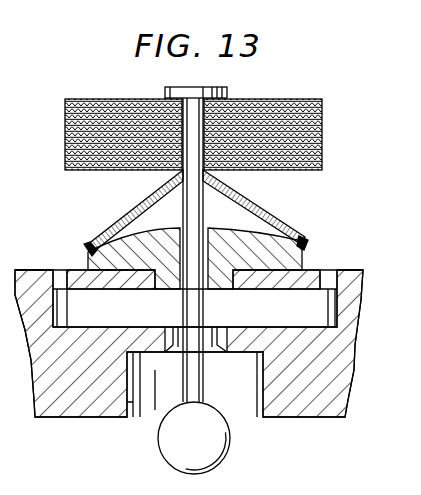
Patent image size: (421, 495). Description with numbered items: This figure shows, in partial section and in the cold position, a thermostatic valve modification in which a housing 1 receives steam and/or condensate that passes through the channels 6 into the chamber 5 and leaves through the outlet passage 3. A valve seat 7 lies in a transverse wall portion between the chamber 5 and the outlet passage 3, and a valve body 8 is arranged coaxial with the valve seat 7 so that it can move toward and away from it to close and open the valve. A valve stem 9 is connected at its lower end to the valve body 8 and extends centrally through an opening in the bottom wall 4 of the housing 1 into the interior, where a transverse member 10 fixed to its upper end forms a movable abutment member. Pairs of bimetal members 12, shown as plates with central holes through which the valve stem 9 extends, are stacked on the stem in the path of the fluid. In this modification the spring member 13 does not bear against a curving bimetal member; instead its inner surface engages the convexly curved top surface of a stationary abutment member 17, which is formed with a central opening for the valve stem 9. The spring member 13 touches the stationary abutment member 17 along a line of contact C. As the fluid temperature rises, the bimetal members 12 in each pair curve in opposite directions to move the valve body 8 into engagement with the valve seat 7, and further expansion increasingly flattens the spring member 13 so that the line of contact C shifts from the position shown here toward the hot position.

The housing 1 is at (340, 341).
The outlet passage 3 is at (128, 418).
The bottom wall 4 is at (26, 270).
The chamber 5 is at (318, 307).
The channels 6 is at (323, 273).
The valve seat 7 is at (218, 352).
The valve body 8 is at (211, 440).
The valve stem 9 is at (192, 191).
The transverse member 10 is at (167, 91).
The bimetal members 12 is at (322, 104).
The spring member 13 is at (277, 216).
The stationary abutment member 17 is at (86, 259).
The line of contact C is at (88, 252).